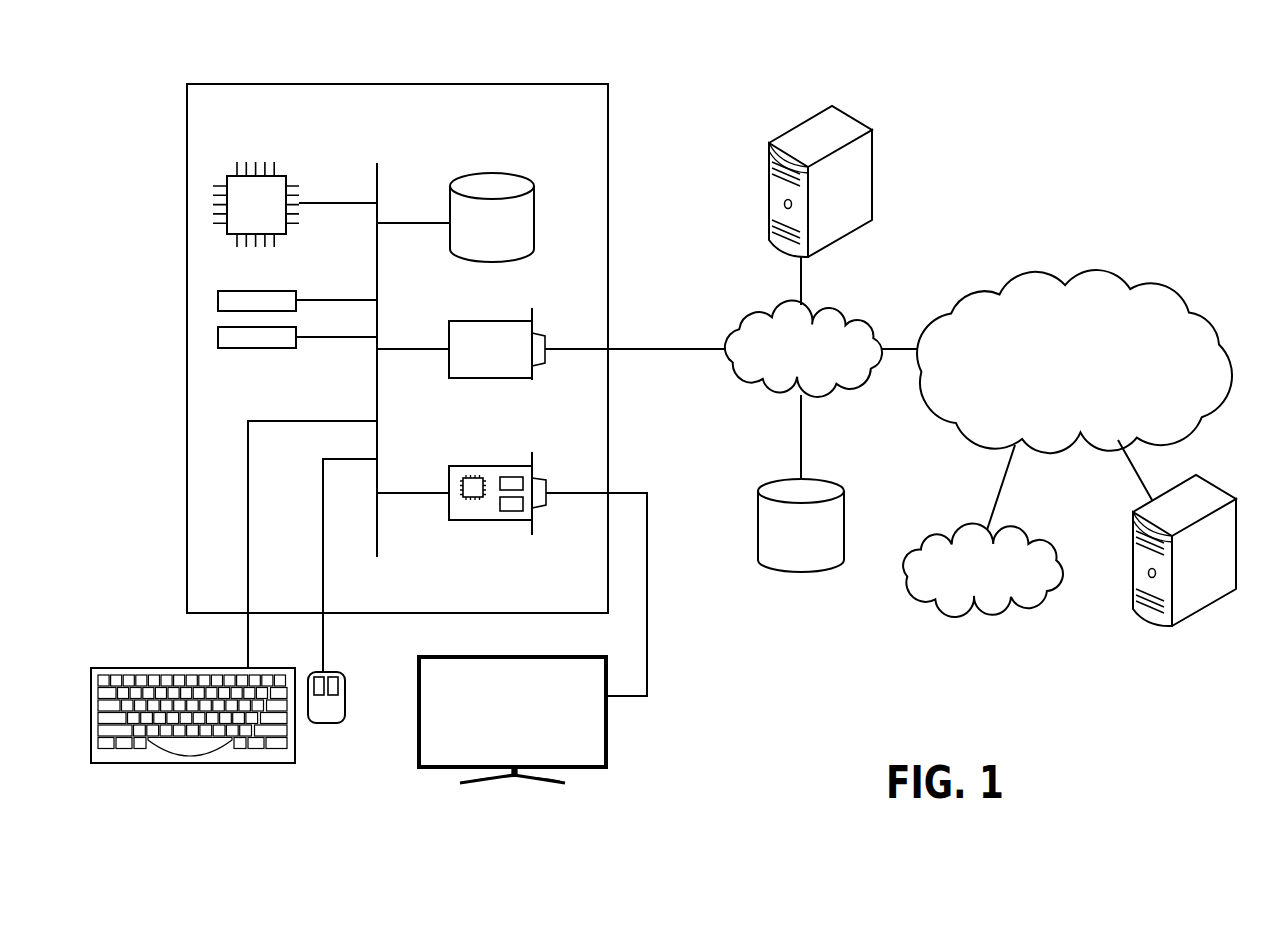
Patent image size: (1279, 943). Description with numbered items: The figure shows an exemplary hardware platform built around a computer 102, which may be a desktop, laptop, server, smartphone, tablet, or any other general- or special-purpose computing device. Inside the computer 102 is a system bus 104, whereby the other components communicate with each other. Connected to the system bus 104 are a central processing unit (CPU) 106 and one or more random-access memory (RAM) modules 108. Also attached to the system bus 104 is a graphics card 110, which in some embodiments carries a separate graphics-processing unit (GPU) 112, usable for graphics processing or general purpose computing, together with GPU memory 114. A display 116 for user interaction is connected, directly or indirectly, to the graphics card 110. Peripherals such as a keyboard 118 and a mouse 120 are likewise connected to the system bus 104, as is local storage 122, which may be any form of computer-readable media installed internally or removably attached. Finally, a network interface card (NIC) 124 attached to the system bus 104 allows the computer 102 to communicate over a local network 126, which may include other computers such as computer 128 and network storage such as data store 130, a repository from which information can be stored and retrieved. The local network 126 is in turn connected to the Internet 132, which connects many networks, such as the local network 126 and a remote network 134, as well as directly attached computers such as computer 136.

The computer 102 is at (563, 84).
The system bus 104 is at (378, 178).
The central processing unit (CPU) 106 is at (283, 172).
The memory modules 108 is at (296, 336).
The graphics card 110 is at (512, 558).
The graphics-processing unit (GPU) 112 is at (471, 497).
The GPU memory 114 is at (509, 511).
The display 116 is at (610, 748).
The keyboard 118 is at (196, 763).
The mouse 120 is at (325, 724).
The local storage 122 is at (536, 206).
The network interface card (NIC) 124 is at (449, 330).
The local network 126 is at (858, 307).
The computer 128 is at (856, 117).
The data store 130 is at (834, 481).
The Internet 132 is at (1118, 268).
The remote network 134 is at (1040, 527).
The computer 136 is at (1213, 482).